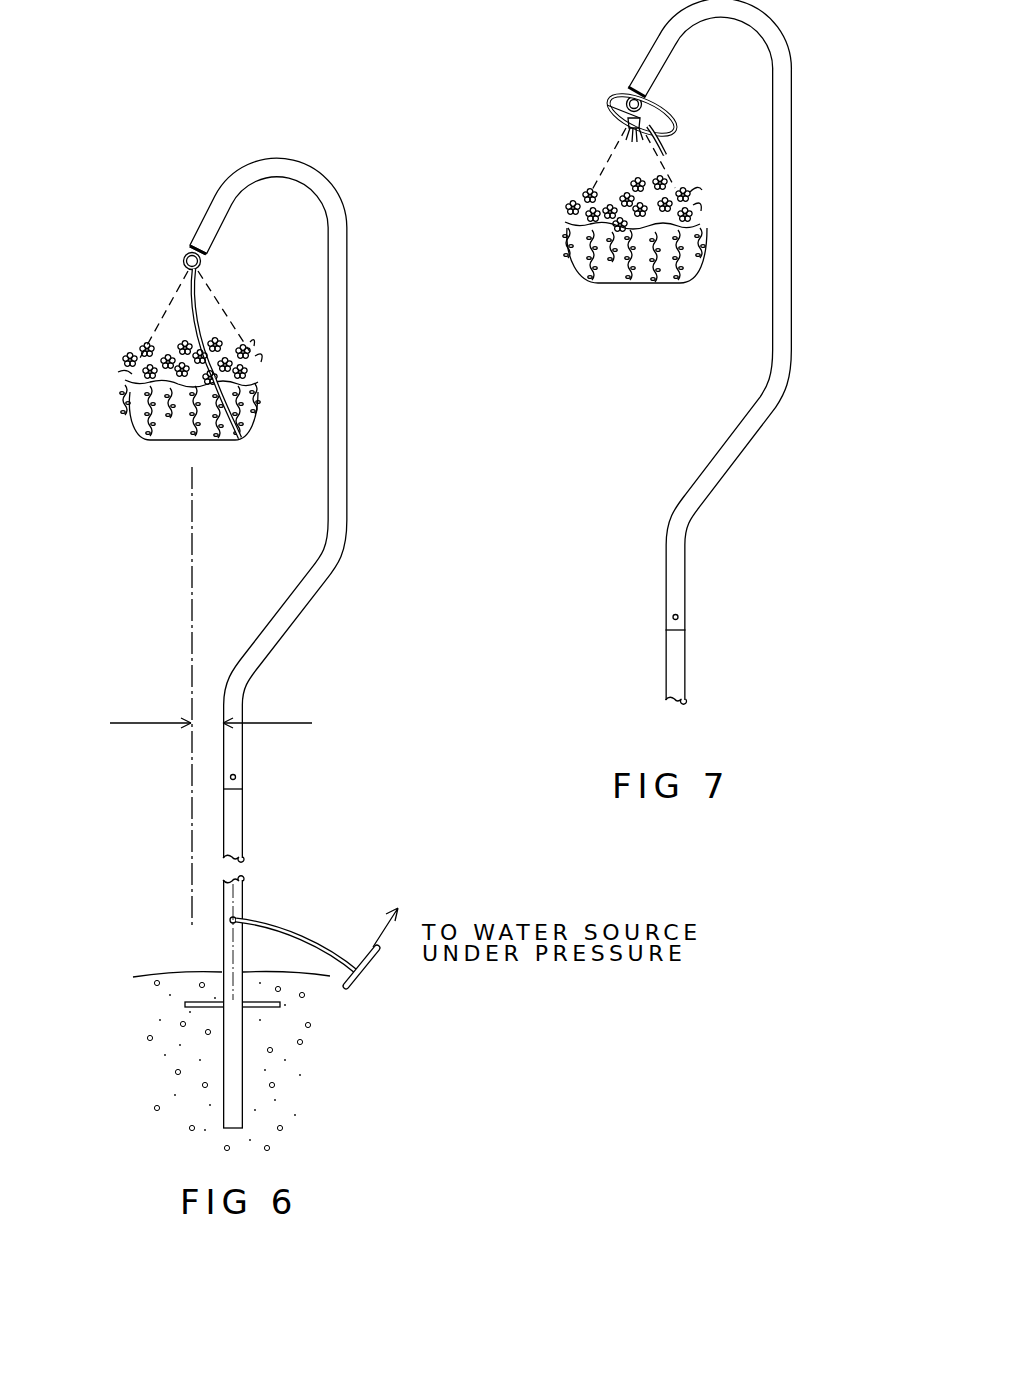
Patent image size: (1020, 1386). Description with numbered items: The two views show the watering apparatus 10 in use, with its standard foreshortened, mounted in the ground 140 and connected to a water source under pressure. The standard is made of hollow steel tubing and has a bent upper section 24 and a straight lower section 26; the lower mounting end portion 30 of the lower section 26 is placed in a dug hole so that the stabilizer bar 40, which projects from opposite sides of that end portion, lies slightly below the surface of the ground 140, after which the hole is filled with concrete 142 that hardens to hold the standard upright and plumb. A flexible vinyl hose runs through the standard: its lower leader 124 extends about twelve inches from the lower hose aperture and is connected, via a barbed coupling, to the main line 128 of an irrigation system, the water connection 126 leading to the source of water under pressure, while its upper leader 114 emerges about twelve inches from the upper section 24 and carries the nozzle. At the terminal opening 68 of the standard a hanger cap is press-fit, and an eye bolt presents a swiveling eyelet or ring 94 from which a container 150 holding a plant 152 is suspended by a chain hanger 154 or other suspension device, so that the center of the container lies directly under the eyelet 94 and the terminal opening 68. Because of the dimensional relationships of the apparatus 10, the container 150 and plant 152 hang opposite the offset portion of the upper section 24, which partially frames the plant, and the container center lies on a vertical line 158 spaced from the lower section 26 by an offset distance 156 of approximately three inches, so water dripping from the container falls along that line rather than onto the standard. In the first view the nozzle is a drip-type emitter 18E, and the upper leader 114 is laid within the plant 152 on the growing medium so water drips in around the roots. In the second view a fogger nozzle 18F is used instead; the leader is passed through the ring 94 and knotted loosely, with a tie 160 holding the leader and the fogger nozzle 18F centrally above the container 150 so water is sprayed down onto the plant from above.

In FIG. 6, the watering apparatus 10 is at (360, 348).
In FIG. 7, the watering apparatus 10 is at (797, 102).
In FIG. 6, the bent upper section 24 is at (348, 467).
In FIG. 7, the bent upper section 24 is at (793, 237).
In FIG. 6, the straight lower section 26 is at (243, 826).
In FIG. 7, the straight lower section 26 is at (687, 670).
In FIG. 6, the lower mounting end portion 30 is at (243, 1066).
In FIG. 6, the stabilizer bar 40 is at (193, 1008).
In FIG. 6, the terminal opening 68 is at (195, 245).
In FIG. 6, the eyelet or ring 94 is at (184, 258).
In FIG. 7, the eyelet or ring 94 is at (632, 97).
In FIG. 6, the upper leader 114 is at (197, 306).
In FIG. 7, the upper leader 114 is at (650, 112).
In FIG. 6, the lower leader 124 is at (307, 938).
In FIG. 6, the water flow direction 126 is at (410, 917).
In FIG. 6, the main line 128 is at (366, 975).
In FIG. 6, the ground 140 is at (168, 973).
In FIG. 6, the soil 142 is at (283, 1076).
In FIG. 6, the container 150 is at (170, 432).
In FIG. 7, the container 150 is at (645, 275).
In FIG. 6, the plant 152 is at (128, 386).
In FIG. 7, the plant 152 is at (567, 226).
In FIG. 6, the chain hanger 154 is at (167, 312).
In FIG. 7, the chain hanger 154 is at (608, 153).
In FIG. 6, the offset distance 156 is at (182, 721).
In FIG. 6, the vertical line 158 is at (192, 650).
In FIG. 7, the tie 160 is at (607, 106).
In FIG. 6, the drip-type emitter 18E is at (222, 440).
In FIG. 7, the fogger nozzle 18F is at (647, 137).